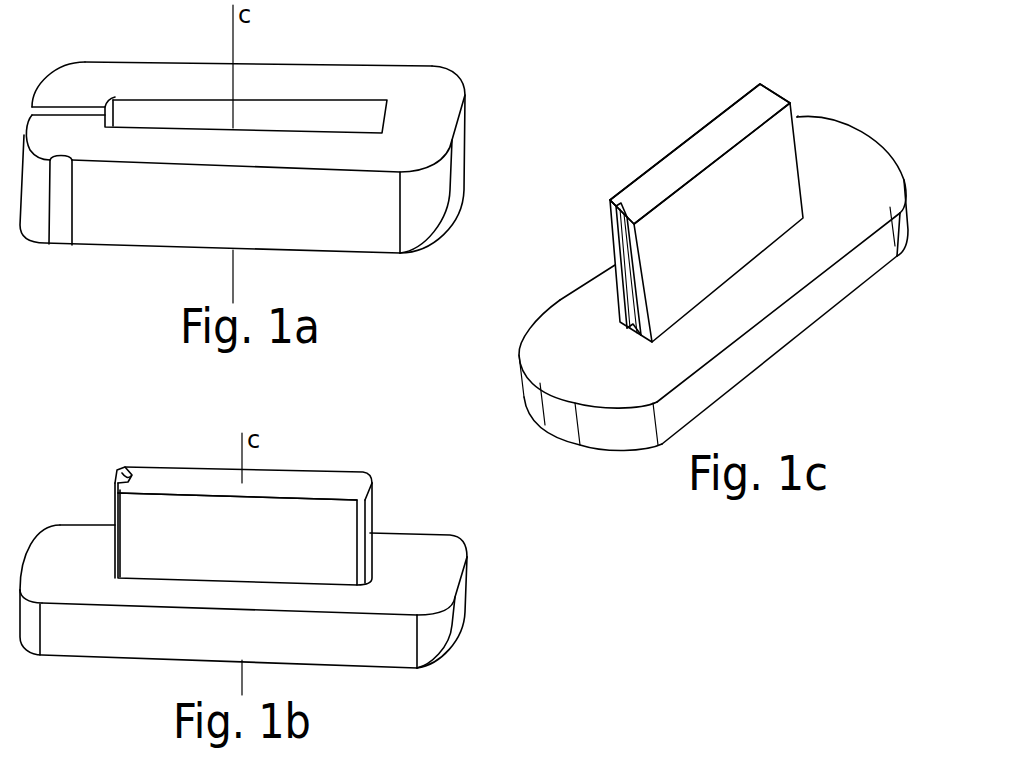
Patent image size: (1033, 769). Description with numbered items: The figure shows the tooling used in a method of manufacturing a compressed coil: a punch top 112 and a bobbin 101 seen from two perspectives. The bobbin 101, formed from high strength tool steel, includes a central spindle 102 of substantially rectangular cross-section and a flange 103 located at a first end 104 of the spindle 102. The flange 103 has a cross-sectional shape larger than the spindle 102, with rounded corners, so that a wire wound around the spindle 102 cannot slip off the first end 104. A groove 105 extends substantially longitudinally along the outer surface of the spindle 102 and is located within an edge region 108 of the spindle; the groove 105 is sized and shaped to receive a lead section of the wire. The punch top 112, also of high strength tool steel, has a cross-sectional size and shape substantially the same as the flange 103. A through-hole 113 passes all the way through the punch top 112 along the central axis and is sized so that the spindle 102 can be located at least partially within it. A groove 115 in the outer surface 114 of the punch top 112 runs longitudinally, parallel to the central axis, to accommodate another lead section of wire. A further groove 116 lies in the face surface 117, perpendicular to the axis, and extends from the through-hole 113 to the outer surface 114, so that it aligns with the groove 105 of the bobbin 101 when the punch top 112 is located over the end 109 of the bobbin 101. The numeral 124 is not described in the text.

In FIG. 1B, the bobbin 101 is at (468, 531).
In FIG. 1C, the bobbin 101 is at (546, 308).
In FIG. 1B, the spindle 102 is at (348, 523).
In FIG. 1C, the spindle 102 is at (786, 124).
In FIG. 1B, the flange 103 is at (443, 659).
In FIG. 1C, the flange 103 is at (793, 303).
In FIG. 1B, the first end 104 is at (113, 575).
In FIG. 1B, the groove 105 is at (125, 468).
In FIG. 1C, the groove 105 is at (617, 203).
In FIG. 1C, the edge region 108 is at (643, 343).
In FIG. 1B, the end 109 is at (330, 483).
In FIG. 1C, the end 109 is at (764, 100).
In FIG. 1A, the punch top 112 is at (472, 68).
In FIG. 1A, the through-hole 113 is at (355, 117).
In FIG. 1A, the outer surface 114 is at (463, 152).
In FIG. 1A, the groove 115 is at (58, 230).
In FIG. 1A, the further groove 116 is at (72, 110).
In FIG. 1A, the face surface 117 is at (273, 90).
In FIG. 1B, the reference mark 124 is at (604, 751).